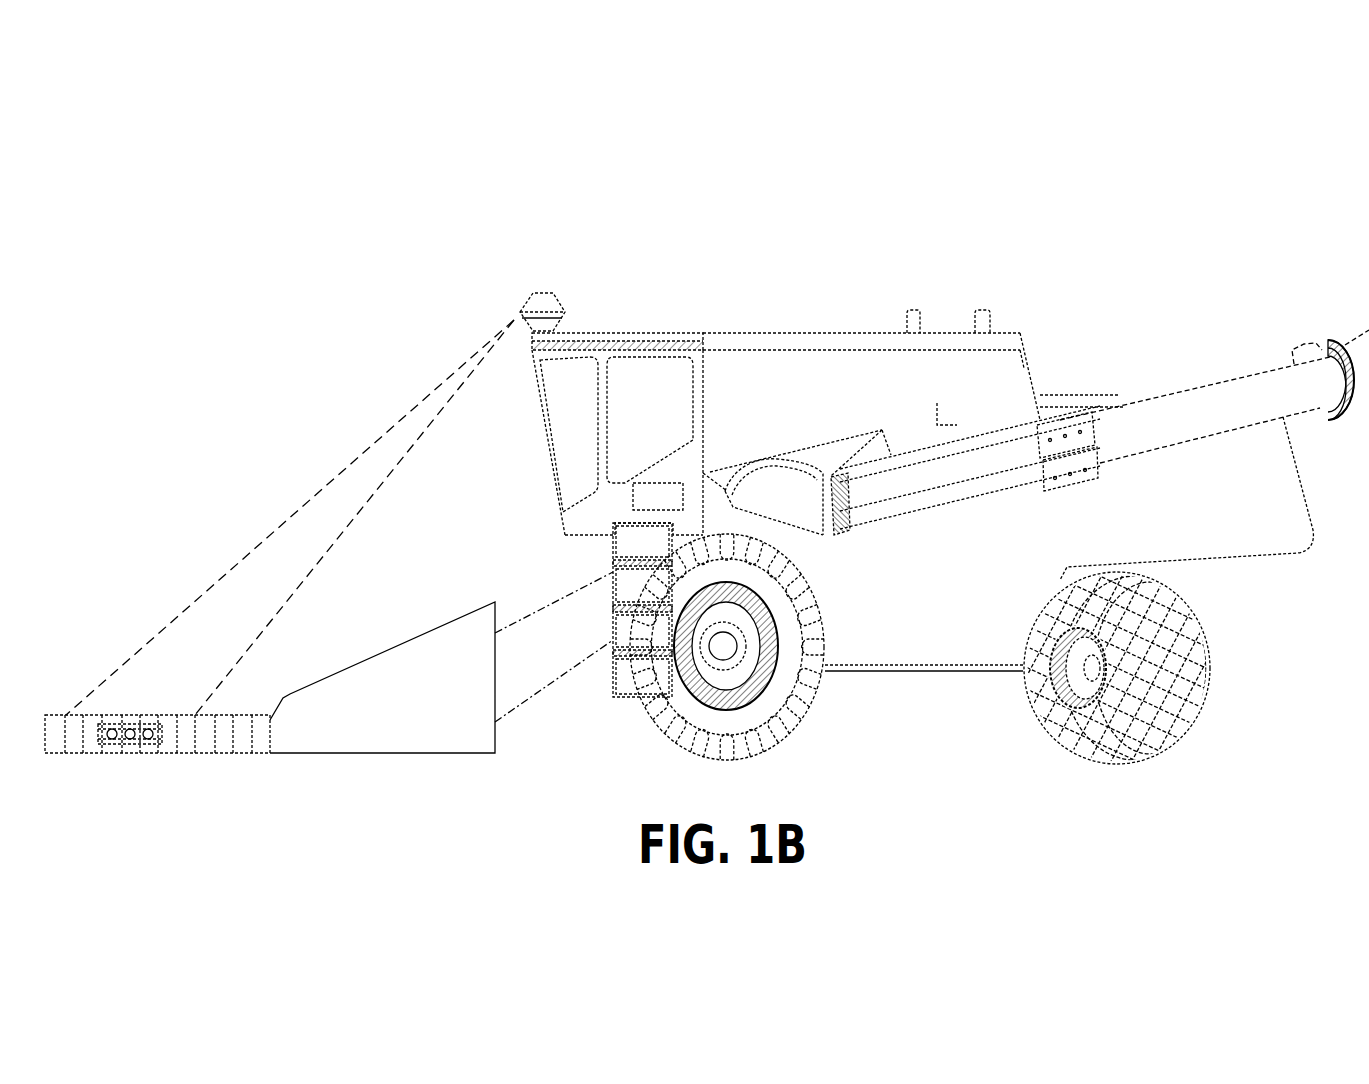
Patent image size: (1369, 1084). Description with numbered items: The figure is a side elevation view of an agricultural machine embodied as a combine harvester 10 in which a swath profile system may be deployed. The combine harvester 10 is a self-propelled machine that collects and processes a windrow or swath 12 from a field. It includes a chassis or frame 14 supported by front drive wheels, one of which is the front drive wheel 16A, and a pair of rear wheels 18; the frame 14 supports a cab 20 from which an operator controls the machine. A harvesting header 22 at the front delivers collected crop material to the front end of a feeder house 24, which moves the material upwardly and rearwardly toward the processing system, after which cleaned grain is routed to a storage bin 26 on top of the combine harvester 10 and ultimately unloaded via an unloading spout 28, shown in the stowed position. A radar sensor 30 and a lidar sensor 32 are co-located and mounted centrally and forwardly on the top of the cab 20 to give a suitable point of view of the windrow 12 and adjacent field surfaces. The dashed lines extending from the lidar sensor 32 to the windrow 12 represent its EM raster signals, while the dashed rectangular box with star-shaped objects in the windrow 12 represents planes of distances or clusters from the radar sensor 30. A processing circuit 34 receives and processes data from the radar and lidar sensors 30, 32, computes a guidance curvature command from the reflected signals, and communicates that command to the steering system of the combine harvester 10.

The combine harvester 10 is at (445, 214).
The windrow or swath 12 is at (46, 715).
The chassis or frame 14 is at (908, 630).
The front drive wheel 16A is at (778, 680).
The rear wheels 18 is at (1192, 682).
The cab 20 is at (640, 338).
The harvesting header 22 is at (440, 716).
The feeder house 24 is at (571, 640).
The storage bin 26 is at (766, 382).
The unloading spout 28 is at (1200, 398).
The radar sensor 30 is at (542, 305).
The lidar sensor 32 is at (543, 322).
The processing circuit 34 is at (645, 507).